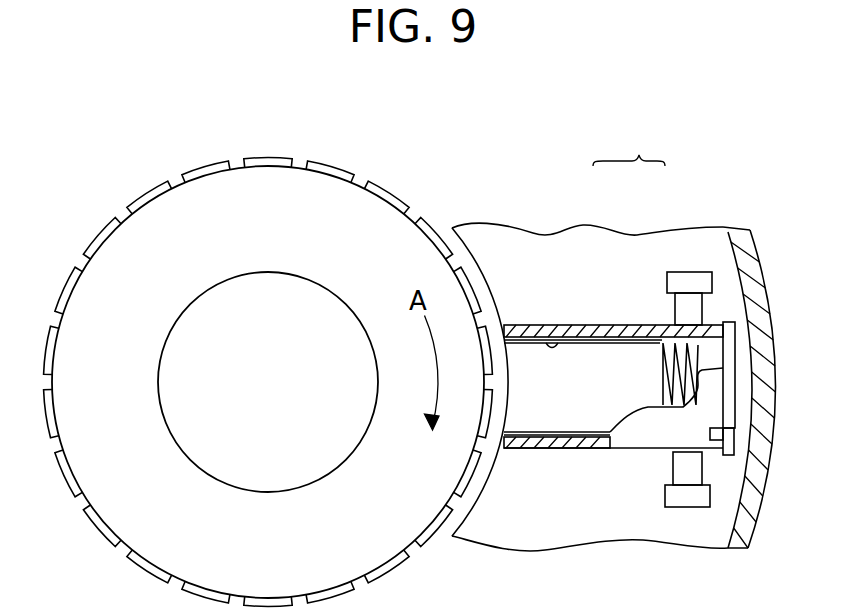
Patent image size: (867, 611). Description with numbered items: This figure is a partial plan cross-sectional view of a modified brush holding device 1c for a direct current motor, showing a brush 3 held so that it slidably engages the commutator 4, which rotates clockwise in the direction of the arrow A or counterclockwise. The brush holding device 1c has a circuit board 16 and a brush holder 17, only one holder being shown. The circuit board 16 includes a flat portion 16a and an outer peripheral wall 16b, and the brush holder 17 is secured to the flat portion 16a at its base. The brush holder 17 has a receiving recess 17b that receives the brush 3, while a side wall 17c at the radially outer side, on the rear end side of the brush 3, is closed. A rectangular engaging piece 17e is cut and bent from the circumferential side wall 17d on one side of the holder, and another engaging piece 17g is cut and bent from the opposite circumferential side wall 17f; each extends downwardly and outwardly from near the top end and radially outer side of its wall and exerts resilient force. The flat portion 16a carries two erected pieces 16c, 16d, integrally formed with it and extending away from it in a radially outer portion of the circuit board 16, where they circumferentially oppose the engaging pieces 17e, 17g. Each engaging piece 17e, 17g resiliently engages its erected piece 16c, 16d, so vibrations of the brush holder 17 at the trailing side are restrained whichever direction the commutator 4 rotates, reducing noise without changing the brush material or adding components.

The commutator 4 is at (332, 165).
The brush holding device 1c is at (629, 146).
The brush holder 17 is at (597, 325).
The circuit board 16 is at (662, 232).
The erected piece 16d is at (692, 277).
The receiving recess 17b is at (548, 325).
The side wall 17f is at (625, 325).
The engaging piece 17g is at (695, 310).
The brush 3 is at (540, 417).
The side wall 17d is at (567, 450).
The engaging piece 17e is at (678, 463).
The side wall 17c is at (770, 450).
The flat portion 16a is at (603, 537).
The erected piece 16c is at (680, 502).
The outer peripheral wall 16b is at (733, 548).